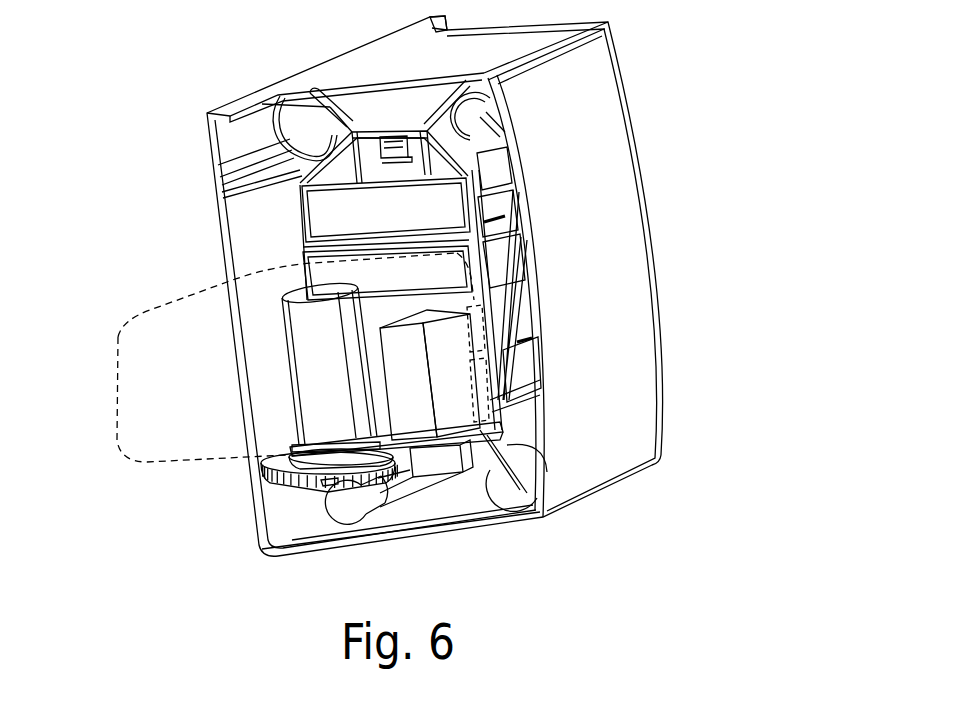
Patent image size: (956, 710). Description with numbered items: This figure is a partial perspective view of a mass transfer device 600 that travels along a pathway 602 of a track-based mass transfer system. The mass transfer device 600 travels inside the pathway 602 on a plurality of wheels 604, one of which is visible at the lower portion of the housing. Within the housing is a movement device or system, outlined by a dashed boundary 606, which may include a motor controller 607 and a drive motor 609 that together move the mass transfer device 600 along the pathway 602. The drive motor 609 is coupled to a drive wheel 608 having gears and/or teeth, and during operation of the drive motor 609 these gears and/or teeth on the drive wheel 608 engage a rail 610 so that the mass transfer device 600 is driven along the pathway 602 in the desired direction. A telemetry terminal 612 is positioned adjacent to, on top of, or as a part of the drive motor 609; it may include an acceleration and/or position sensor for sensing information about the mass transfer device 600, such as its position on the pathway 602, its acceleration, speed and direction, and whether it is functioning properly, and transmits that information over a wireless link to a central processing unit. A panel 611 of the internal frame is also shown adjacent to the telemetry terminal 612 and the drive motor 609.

The mass transfer device 600 is at (297, 250).
The pathway 602 is at (463, 523).
The wheels 604 is at (352, 510).
The motor module 606 is at (117, 368).
The motor controller 607 is at (303, 315).
The drive wheel 608 is at (307, 480).
The drive motor 609 is at (310, 375).
The rail 610 is at (263, 477).
The panel 611 is at (450, 207).
The telemetry terminal 612 is at (437, 310).